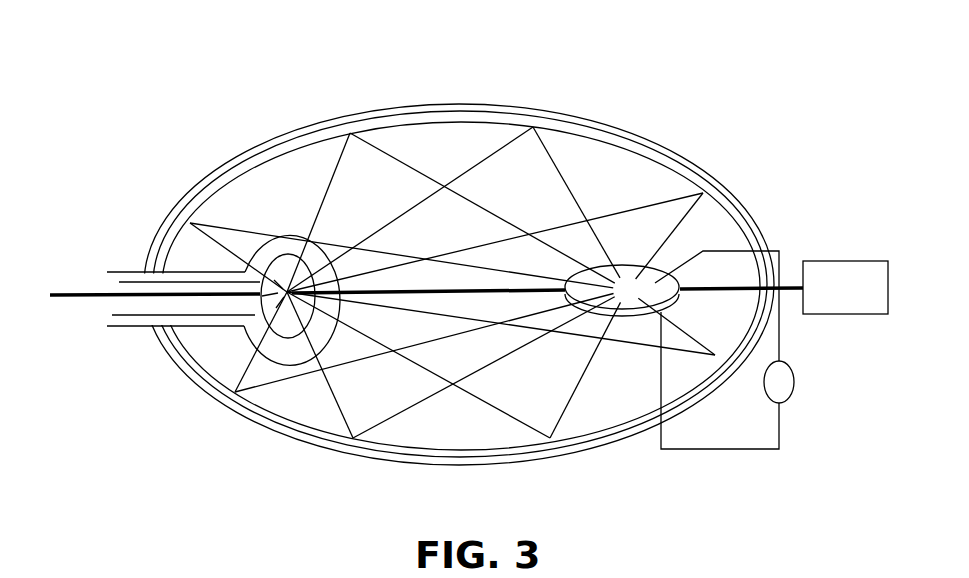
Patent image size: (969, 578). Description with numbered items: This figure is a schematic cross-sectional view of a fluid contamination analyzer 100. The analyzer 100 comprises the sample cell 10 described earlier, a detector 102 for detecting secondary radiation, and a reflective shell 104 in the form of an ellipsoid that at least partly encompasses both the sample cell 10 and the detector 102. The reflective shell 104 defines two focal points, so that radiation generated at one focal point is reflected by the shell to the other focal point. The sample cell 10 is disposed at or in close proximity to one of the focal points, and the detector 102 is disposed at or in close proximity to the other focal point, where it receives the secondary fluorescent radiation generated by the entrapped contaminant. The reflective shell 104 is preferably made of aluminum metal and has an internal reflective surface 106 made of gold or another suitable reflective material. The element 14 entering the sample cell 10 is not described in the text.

The fluid contamination analyzer 100 is at (645, 66).
The reflective shell 104 is at (487, 103).
The internal reflective surface 106 is at (405, 447).
The sample cell 10 is at (333, 260).
The optical fiber 14 is at (92, 294).
The detector 102 is at (633, 263).